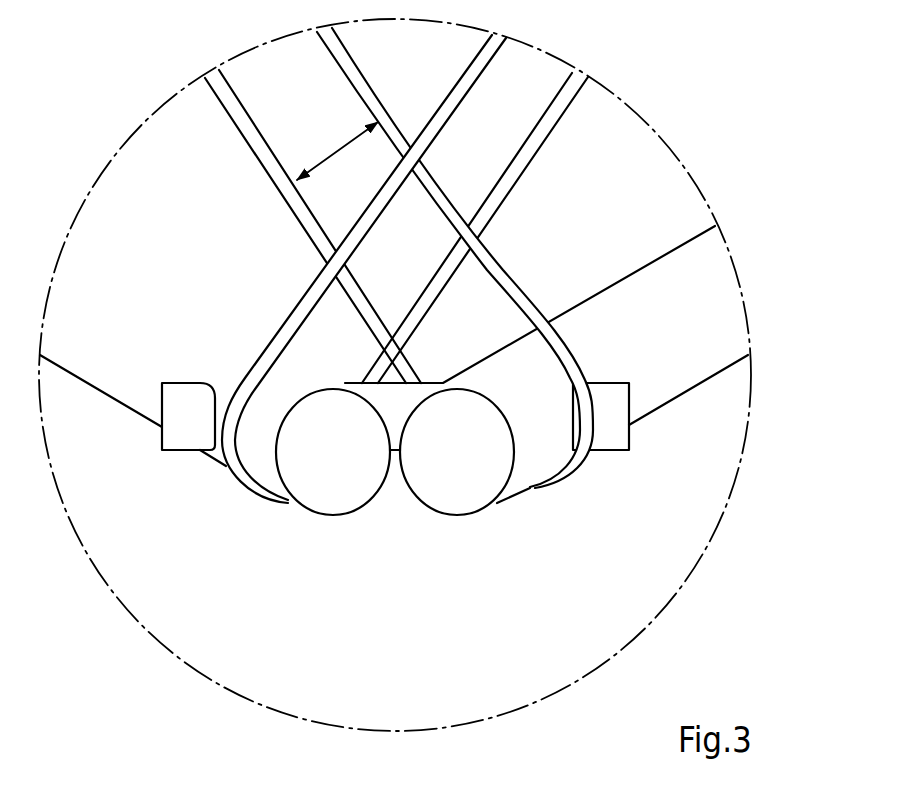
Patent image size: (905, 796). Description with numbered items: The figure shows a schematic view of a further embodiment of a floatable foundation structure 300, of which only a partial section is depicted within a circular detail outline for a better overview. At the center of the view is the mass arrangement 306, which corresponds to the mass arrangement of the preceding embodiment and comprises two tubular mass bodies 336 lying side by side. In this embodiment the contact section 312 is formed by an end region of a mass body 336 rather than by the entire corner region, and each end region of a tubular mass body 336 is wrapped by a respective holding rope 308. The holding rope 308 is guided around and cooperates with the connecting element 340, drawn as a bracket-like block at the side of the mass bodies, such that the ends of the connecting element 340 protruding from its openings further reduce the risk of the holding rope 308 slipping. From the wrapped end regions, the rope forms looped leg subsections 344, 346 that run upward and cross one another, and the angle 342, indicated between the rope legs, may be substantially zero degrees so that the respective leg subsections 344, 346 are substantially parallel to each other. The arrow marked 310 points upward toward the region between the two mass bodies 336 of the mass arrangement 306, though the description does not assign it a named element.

The floatable foundation structure 300 is at (728, 95).
The mass arrangement 306 is at (695, 437).
The holding rope 308 is at (250, 135).
The holder 310 is at (428, 357).
The contact section 312 is at (399, 313).
The mass body 336 is at (335, 493).
The connecting element 340 is at (177, 433).
The angle 342 is at (336, 152).
The leg subsection 344 is at (522, 273).
The leg subsection 346 is at (290, 292).